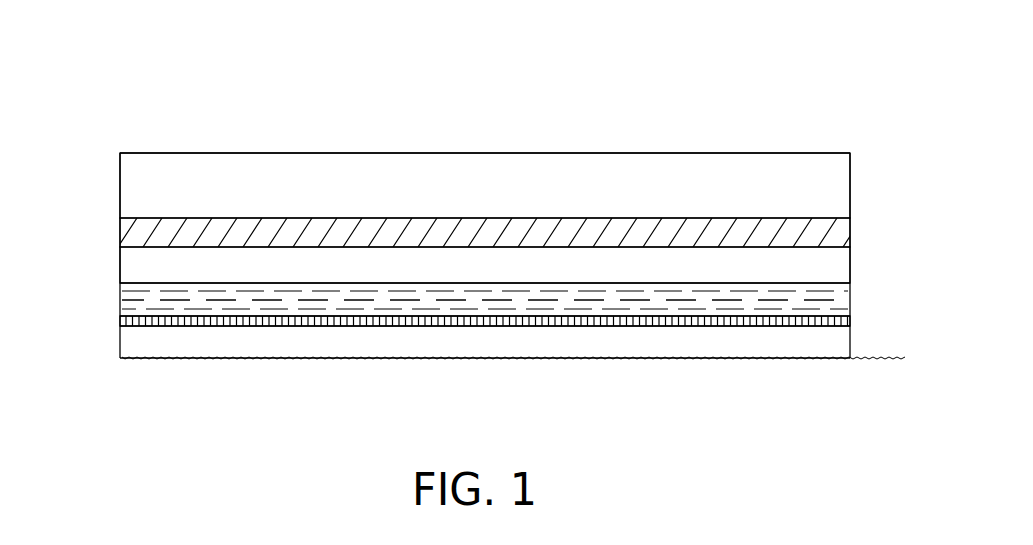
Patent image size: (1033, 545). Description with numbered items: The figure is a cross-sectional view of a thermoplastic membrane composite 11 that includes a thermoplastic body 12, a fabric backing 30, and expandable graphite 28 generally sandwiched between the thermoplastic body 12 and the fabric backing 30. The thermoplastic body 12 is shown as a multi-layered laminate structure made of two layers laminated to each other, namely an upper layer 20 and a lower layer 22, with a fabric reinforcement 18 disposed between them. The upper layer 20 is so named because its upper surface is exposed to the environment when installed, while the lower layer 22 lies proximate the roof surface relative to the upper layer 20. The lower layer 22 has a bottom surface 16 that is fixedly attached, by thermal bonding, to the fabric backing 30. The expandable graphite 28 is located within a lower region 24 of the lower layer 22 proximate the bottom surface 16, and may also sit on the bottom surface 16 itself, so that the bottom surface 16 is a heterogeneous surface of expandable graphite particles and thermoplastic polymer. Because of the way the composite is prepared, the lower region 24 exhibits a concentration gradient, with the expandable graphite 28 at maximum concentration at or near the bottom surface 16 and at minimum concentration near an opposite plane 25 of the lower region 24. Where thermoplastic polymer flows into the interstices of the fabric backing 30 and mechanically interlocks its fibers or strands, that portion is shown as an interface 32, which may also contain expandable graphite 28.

The composite 11 is at (205, 100).
The thermoplastic body 12 is at (873, 153).
The bottom surface 16 is at (716, 313).
The fabric reinforcement 18 is at (120, 233).
The upper layer 20 is at (111, 186).
The lower layer 22 is at (112, 268).
The lower region 24 is at (118, 283).
The opposite plane 25 is at (208, 283).
The expandable graphite 28 is at (284, 300).
The fabric backing 30 is at (858, 328).
The interface 32 is at (119, 318).